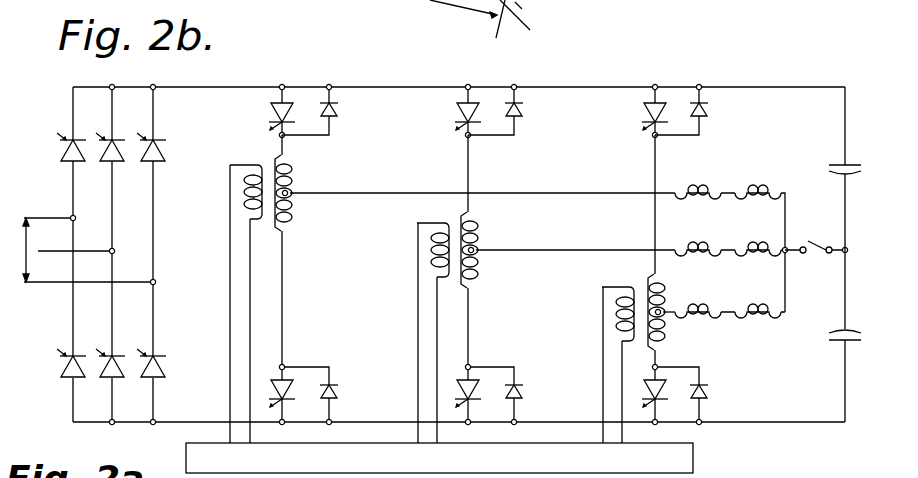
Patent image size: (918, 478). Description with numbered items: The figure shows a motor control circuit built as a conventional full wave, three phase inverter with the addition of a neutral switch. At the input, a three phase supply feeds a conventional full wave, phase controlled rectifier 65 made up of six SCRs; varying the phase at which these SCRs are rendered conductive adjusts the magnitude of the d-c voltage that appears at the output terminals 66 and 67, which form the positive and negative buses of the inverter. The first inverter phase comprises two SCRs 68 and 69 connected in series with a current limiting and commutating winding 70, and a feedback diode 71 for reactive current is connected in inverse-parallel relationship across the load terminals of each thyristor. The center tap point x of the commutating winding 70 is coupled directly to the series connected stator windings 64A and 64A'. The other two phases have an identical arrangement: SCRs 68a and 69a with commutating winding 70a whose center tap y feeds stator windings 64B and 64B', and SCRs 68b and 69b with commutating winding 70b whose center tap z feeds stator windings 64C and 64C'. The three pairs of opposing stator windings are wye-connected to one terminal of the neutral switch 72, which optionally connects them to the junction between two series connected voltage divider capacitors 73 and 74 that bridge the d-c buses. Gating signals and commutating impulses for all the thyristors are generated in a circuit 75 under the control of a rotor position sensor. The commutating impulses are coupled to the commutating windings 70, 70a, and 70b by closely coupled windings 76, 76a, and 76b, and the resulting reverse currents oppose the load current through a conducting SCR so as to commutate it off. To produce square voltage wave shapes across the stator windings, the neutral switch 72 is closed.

The stator winding 64A is at (698, 180).
The stator winding 64A' is at (753, 237).
The stator winding 64B is at (698, 238).
The stator winding 64B' is at (754, 238).
The stator winding 64C is at (698, 299).
The stator winding 64C' is at (753, 299).
The phase controlled rectifier 65 is at (140, 242).
The output terminal 66 is at (262, 87).
The output terminal 67 is at (184, 422).
The SCR 68 is at (270, 109).
The SCR 68a is at (458, 109).
The SCR 68b is at (645, 109).
The SCR 69 is at (276, 378).
The SCR 69a is at (462, 378).
The SCR 69b is at (662, 378).
The current limiting and commutating winding 70 is at (292, 217).
The commutating winding 70a is at (478, 236).
The commutating winding 70b is at (664, 336).
The feedback diode 71 is at (334, 112).
The neutral switch 72 is at (822, 247).
The voltage divider capacitor 73 is at (834, 163).
The voltage divider capacitor 74 is at (836, 343).
The gating signals and commutating impulses circuit 75 is at (693, 456).
The closely coupled winding 76 is at (250, 172).
The closely coupled winding 76a is at (430, 262).
The closely coupled winding 76b is at (624, 290).